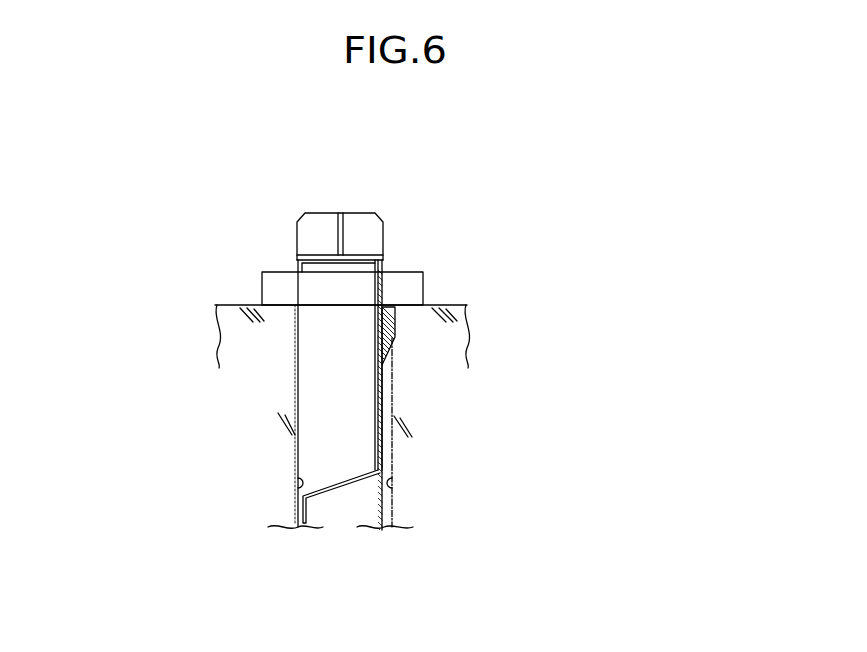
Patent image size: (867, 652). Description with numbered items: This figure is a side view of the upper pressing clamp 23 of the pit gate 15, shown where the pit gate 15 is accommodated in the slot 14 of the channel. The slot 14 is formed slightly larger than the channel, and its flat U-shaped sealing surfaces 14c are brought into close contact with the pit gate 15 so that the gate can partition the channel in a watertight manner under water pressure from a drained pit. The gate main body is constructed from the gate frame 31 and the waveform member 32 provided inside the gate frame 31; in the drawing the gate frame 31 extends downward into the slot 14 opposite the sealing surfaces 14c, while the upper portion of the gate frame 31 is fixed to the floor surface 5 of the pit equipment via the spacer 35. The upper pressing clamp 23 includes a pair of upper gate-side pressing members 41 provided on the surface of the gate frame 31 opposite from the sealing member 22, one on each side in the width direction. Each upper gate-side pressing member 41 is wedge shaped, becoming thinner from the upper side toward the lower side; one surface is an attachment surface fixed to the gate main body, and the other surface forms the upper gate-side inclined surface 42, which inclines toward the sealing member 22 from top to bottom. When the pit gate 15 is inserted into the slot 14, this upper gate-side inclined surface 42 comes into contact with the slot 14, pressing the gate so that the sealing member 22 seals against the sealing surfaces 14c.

The floor surface 5 is at (458, 305).
The slot 14 is at (389, 538).
The sealing surface 14c is at (293, 492).
The pit gate 15 is at (363, 202).
The sealing member 22 is at (297, 393).
The upper pressing clamp 23 is at (587, 400).
The gate frame 31 is at (362, 255).
The waveform member 32 is at (335, 492).
The spacer 35 is at (397, 272).
The upper gate-side pressing member 41 is at (395, 337).
The upper gate-side inclined surface 42 is at (385, 350).